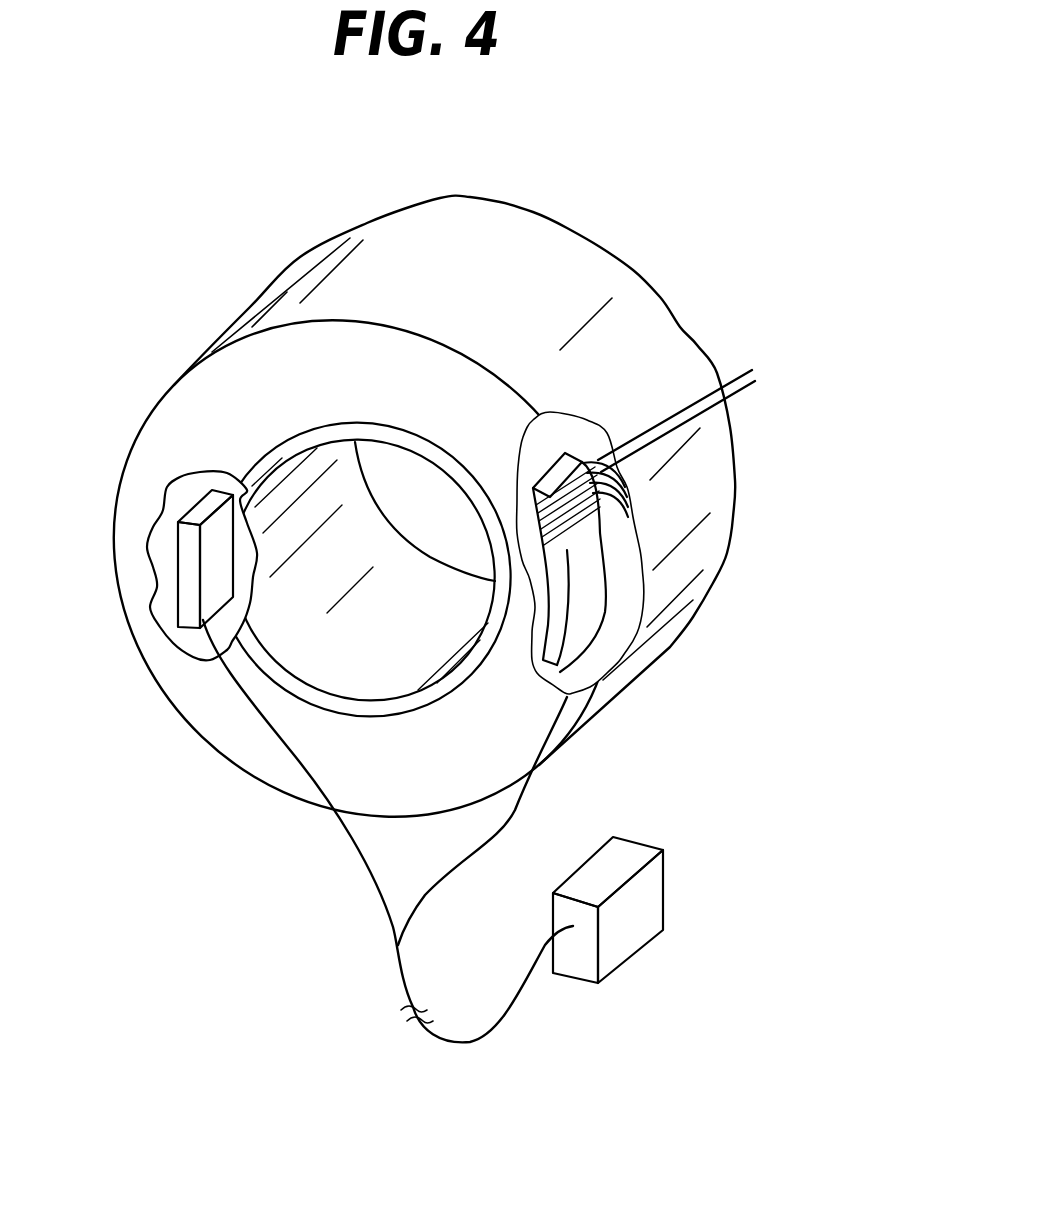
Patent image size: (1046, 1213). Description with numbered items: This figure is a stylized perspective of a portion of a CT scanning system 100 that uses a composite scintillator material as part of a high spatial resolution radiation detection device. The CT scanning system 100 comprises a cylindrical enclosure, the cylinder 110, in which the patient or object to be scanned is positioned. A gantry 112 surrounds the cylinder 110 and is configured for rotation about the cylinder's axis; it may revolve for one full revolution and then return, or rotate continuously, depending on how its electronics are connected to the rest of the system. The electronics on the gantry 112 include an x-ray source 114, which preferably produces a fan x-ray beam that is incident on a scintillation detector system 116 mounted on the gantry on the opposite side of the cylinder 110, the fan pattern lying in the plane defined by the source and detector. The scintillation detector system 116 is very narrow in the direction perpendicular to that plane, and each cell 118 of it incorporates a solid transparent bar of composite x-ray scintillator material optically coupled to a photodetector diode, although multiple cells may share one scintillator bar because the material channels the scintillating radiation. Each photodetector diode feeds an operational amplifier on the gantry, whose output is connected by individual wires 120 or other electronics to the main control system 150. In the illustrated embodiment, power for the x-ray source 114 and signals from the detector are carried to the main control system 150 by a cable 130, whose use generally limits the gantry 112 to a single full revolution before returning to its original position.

The CT scanning system 100 is at (403, 190).
The cylinder 110 is at (458, 487).
The gantry 112 is at (310, 277).
The x-ray source 114 is at (188, 578).
The scintillation detector system 116 is at (576, 447).
The cell 118 is at (696, 411).
The individual wires 120 is at (627, 483).
The cable 130 is at (395, 966).
The main control system 150 is at (662, 907).